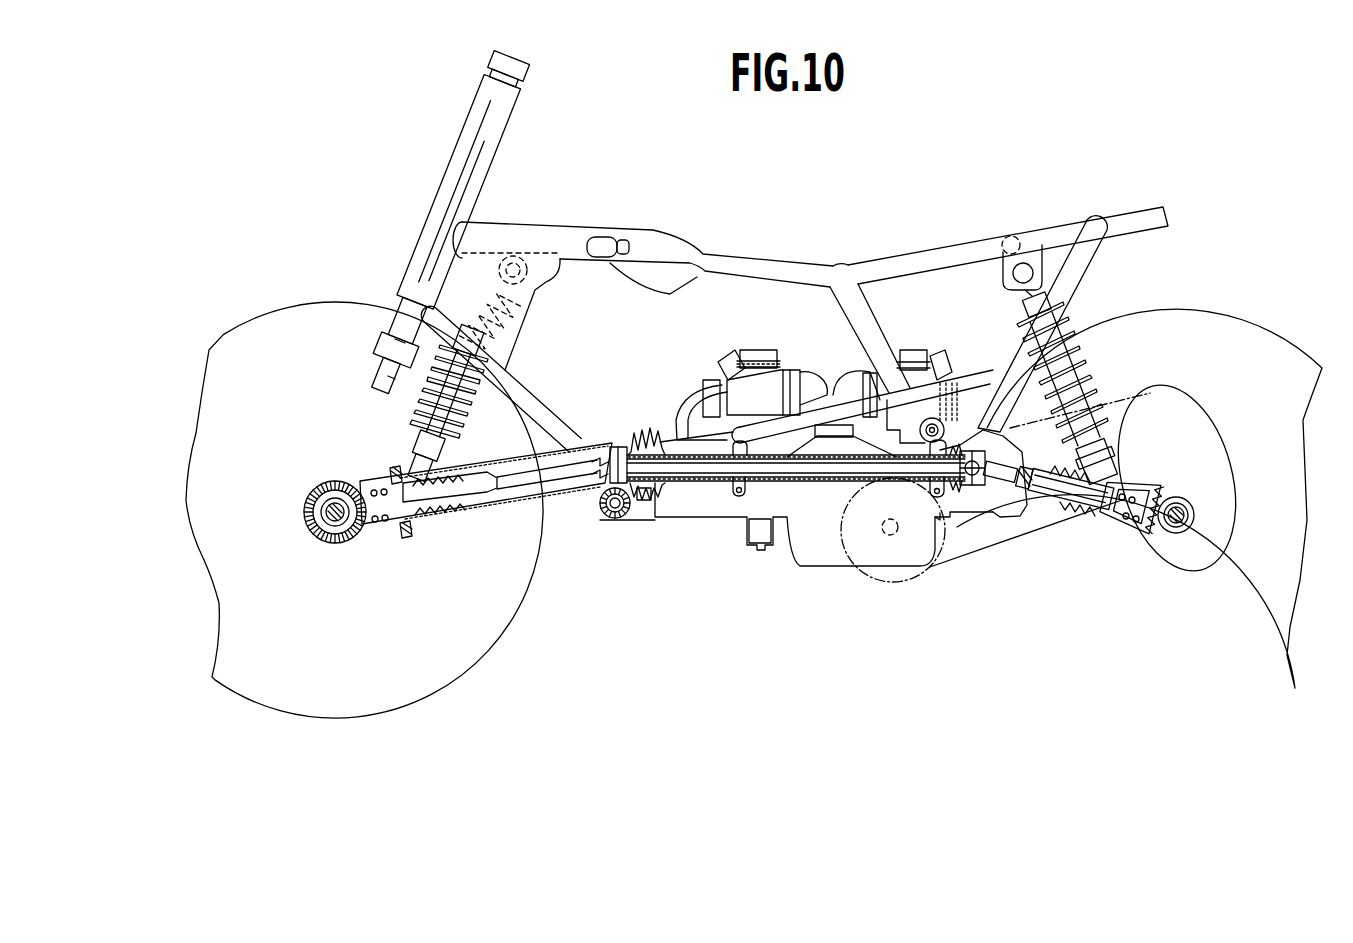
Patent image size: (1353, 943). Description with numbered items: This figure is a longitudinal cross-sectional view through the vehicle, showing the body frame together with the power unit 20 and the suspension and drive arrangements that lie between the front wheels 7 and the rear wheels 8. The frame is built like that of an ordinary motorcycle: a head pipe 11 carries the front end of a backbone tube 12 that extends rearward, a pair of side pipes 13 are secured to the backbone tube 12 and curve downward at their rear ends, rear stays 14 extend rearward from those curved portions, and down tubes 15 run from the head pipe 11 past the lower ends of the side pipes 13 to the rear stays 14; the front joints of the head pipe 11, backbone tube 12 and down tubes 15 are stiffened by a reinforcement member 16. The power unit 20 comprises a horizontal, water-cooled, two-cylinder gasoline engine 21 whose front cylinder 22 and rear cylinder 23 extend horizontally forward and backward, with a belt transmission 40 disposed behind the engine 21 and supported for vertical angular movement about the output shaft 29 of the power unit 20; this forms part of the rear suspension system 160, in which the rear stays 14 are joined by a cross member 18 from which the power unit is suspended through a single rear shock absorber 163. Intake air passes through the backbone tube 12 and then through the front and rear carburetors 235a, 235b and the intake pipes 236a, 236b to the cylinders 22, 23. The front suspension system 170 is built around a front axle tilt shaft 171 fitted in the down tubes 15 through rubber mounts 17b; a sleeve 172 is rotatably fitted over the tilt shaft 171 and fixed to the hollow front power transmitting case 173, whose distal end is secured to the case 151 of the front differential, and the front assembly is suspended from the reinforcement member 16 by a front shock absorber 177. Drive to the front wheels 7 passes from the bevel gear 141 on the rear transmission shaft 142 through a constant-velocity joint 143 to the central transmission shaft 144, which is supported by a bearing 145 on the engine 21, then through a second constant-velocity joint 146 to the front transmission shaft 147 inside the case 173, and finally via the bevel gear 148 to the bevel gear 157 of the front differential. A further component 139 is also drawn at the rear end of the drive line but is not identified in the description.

The front wheels 7 is at (240, 330).
The rear wheels 8 is at (1307, 353).
The head pipe 11 is at (467, 135).
The backbone tube 12 is at (658, 234).
The side pipes 13 is at (775, 254).
The rear stays 14 is at (947, 250).
The down tubes 15 is at (553, 417).
The reinforcement member 16 is at (540, 232).
The cross member 18 is at (1012, 236).
The power unit 20 is at (771, 550).
The engine 21 is at (823, 374).
The front cylinder 22 is at (675, 514).
The rear cylinder 23 is at (977, 508).
The output shaft 29 is at (889, 535).
The belt transmission 40 is at (990, 547).
The rear hub 139 is at (1180, 535).
The bevel gear 141 is at (1148, 530).
The rear transmission shaft 142 is at (1130, 508).
The constant-velocity joint 143 is at (943, 511).
The central transmission shaft 144 is at (820, 468).
The bearing 145 is at (728, 481).
The constant-velocity joint 146 is at (605, 478).
The front transmission shaft 147 is at (530, 484).
The bevel gear 148 is at (360, 528).
The front differential case 151 is at (305, 490).
The bevel gear of the front differential 157 is at (331, 483).
The rear suspension system 160 is at (1180, 295).
The rear shock absorber 163 is at (1050, 320).
The front suspension system 170 is at (405, 242).
The front axle tilt shaft 171 is at (618, 512).
The sleeve 172 is at (617, 512).
The front power transmitting case 173 is at (430, 514).
The front shock absorber 177 is at (427, 397).
The rubber mounts 17b is at (651, 497).
The front carburetor 235a is at (760, 349).
The rear carburetor 235b is at (913, 351).
The front intake pipe 236a is at (687, 400).
The rear intake pipe 236b is at (977, 372).